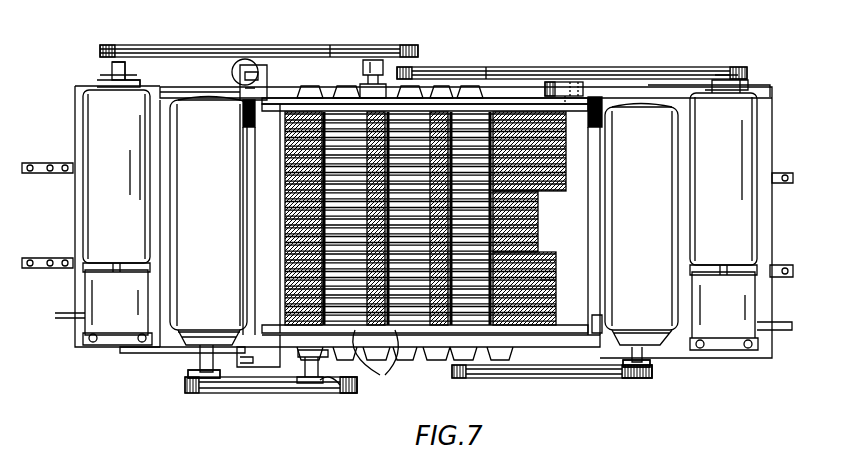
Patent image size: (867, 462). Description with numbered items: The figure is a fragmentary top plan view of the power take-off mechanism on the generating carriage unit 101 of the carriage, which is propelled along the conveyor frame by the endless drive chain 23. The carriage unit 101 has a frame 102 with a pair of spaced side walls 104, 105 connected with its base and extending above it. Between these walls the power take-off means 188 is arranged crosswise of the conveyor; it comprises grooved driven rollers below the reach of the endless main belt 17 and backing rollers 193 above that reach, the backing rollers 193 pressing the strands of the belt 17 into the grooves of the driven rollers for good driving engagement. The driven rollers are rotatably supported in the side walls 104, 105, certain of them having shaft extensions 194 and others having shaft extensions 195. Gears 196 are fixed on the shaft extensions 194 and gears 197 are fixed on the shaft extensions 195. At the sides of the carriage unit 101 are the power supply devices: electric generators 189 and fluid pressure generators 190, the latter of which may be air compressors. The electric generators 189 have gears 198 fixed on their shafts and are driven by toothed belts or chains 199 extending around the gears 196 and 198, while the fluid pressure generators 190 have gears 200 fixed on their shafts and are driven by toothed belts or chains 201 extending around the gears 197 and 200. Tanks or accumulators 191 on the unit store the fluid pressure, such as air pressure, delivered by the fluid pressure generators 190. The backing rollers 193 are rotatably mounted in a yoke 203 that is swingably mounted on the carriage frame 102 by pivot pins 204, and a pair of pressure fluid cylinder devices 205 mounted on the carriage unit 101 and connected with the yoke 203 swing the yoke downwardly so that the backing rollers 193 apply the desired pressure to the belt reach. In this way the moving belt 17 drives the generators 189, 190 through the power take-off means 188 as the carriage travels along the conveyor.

The endless main belt 17 is at (570, 286).
The endless drive chain 23 is at (28, 175).
The carriage unit 101 is at (540, 86).
The frame 102 is at (505, 97).
The side wall 104 is at (155, 353).
The side wall 105 is at (180, 88).
The power take-off means 188 is at (540, 198).
The electric generator 189 is at (240, 218).
The fluid pressure generator 190 is at (90, 128).
The tank or accumulator 191 is at (90, 300).
The backing roller 193 is at (378, 372).
The shaft extension 194 is at (350, 390).
The shaft extension 195 is at (368, 80).
The gear 196 is at (295, 395).
The gear 197 is at (333, 45).
The gear 198 is at (200, 395).
The toothed belt or chain 199 is at (250, 393).
The gear 200 is at (124, 45).
The toothed belt or chain 201 is at (208, 45).
The yoke 203 is at (286, 350).
The pivot pin 204 is at (586, 90).
The pressure fluid cylinder device 205 is at (250, 60).